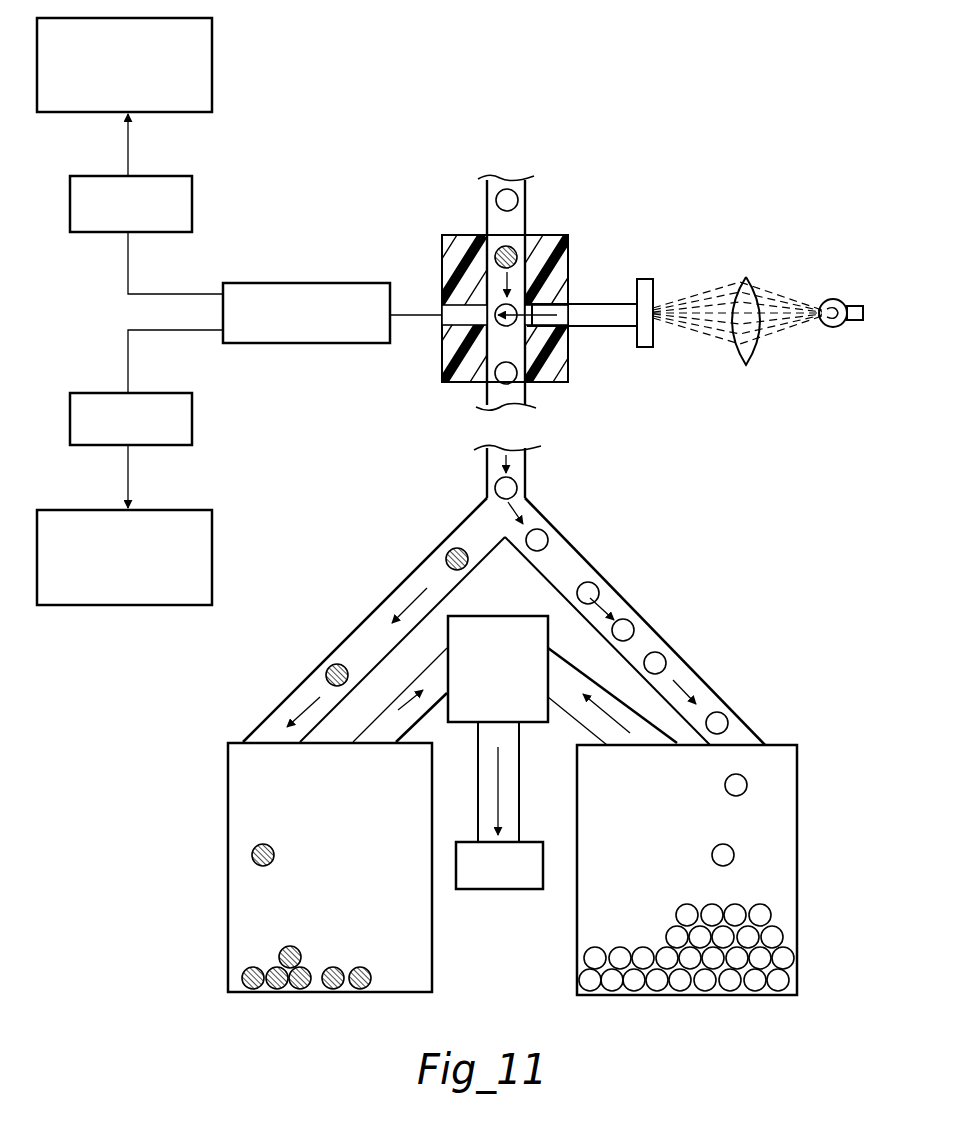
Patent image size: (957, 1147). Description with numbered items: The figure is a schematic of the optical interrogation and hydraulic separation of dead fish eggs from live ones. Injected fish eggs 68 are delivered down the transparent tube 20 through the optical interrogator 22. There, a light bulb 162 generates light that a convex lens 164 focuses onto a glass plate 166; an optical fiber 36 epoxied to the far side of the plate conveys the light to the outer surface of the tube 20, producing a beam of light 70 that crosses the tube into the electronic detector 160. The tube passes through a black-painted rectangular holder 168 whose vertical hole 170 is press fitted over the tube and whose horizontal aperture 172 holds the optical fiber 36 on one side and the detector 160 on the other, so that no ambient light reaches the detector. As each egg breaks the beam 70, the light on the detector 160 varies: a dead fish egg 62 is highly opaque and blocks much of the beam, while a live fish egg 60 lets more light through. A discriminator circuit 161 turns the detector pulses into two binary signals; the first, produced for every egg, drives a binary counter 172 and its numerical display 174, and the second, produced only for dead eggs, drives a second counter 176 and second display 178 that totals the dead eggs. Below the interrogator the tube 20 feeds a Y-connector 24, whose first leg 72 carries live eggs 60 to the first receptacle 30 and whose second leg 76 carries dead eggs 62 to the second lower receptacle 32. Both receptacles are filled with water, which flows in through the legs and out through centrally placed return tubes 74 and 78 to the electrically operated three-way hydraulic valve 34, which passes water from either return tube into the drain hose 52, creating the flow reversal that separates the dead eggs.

The transparent tube 20 is at (527, 187).
The optical interrogator 22 is at (582, 217).
The Y-connector 24 is at (540, 487).
The first receptacle 30 is at (797, 848).
The second lower receptacle 32 is at (432, 978).
The hydraulic valve 34 is at (518, 622).
The optical fiber 36 is at (607, 320).
The drain hose 52 is at (563, 768).
The live fish egg 60 is at (496, 198).
The dead fish egg 62 is at (499, 249).
The injected fish egg 68 is at (515, 238).
The beam of light 70 is at (537, 303).
The first leg 72 is at (573, 562).
The return tube 74 is at (568, 675).
The second leg 76 is at (412, 575).
The return tube 78 is at (432, 672).
The electronic detector 160 is at (465, 322).
The discriminator circuit 161 is at (335, 281).
The light bulb 162 is at (847, 310).
The convex lens 164 is at (745, 300).
The glass plate 166 is at (645, 280).
The rectangular holder 168 is at (558, 373).
The vertical hole 170 is at (527, 383).
The horizontal aperture 172 is at (192, 180).
The numerical display 174 is at (213, 75).
The second binary counter 176 is at (192, 424).
The second numerical display 178 is at (213, 548).